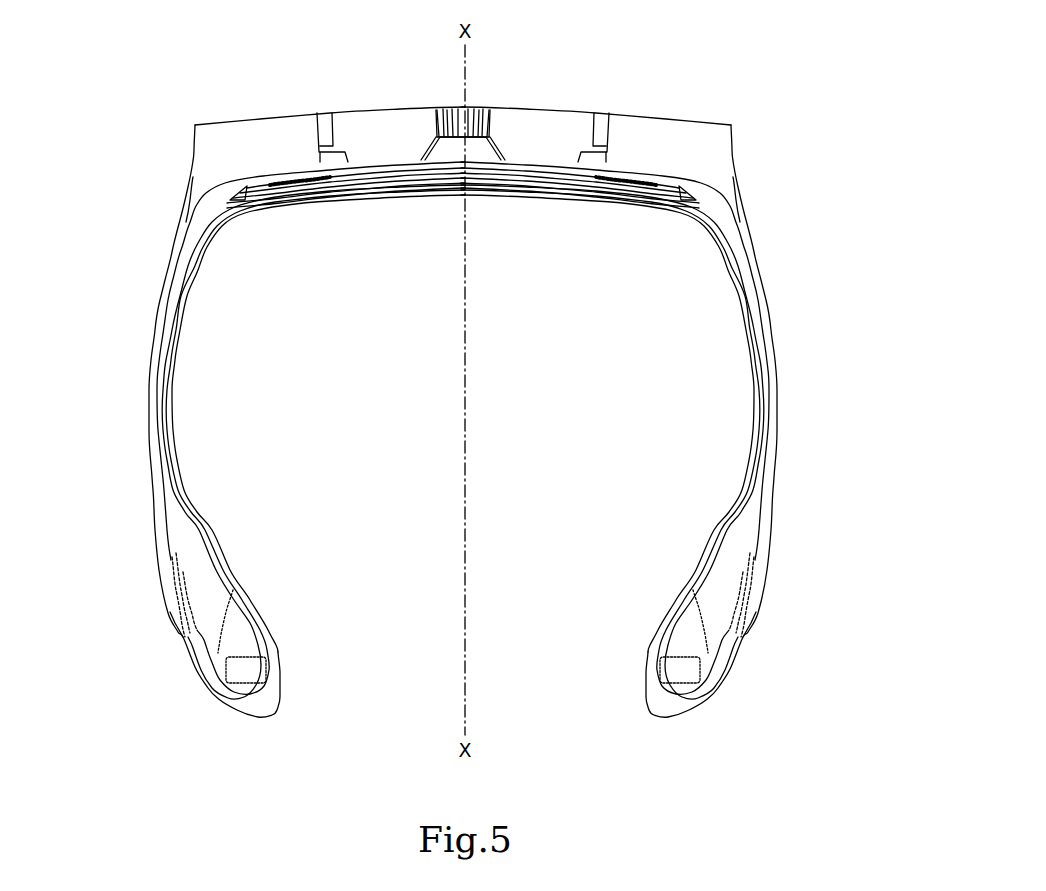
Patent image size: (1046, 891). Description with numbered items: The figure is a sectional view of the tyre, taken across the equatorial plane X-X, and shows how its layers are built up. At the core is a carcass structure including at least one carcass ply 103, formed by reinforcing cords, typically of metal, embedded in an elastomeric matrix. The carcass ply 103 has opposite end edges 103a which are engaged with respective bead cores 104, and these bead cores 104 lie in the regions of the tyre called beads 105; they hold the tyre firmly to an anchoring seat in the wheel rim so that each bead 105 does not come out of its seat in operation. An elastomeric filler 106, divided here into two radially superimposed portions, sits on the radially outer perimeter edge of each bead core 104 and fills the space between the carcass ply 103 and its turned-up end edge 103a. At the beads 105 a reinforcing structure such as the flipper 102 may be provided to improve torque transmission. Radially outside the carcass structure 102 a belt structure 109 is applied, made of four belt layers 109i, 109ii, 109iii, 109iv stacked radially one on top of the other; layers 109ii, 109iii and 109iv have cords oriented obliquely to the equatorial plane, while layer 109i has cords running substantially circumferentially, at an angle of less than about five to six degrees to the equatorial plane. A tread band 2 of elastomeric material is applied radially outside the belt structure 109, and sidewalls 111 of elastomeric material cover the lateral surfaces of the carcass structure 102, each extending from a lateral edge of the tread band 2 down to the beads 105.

The tread band 2 is at (685, 140).
The flipper 102 is at (658, 637).
The carcass ply 103 is at (757, 412).
The end edges 103a is at (738, 600).
The bead cores 104 is at (673, 670).
The beads 105 is at (740, 650).
The elastomeric filler 106 is at (707, 590).
The belt structure 109 is at (407, 172).
The belt layer 109i is at (641, 172).
The belt layer 109ii is at (695, 183).
The belt layer 109iii is at (697, 197).
The belt layer 109iv is at (538, 168).
The sidewalls 111 is at (768, 300).